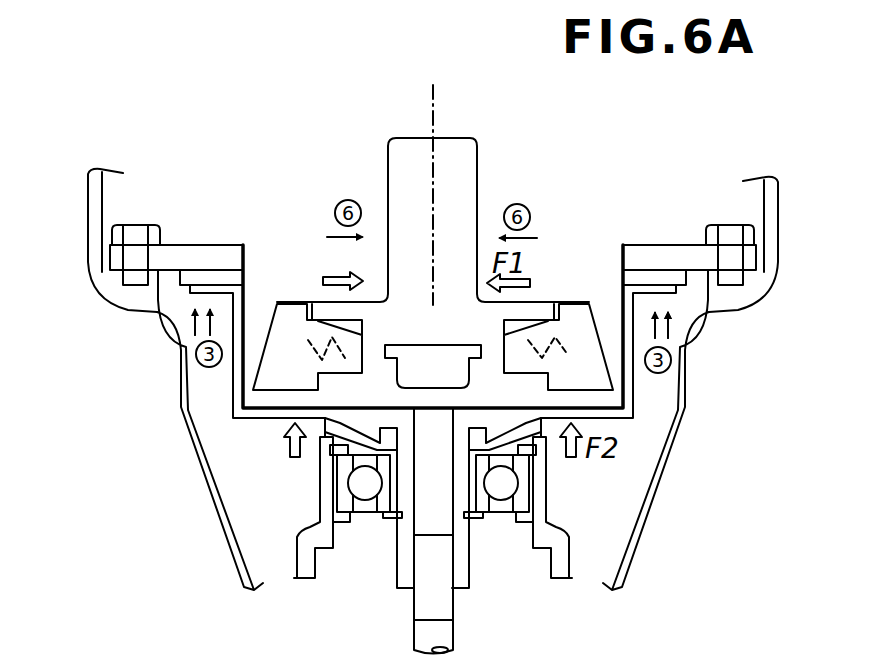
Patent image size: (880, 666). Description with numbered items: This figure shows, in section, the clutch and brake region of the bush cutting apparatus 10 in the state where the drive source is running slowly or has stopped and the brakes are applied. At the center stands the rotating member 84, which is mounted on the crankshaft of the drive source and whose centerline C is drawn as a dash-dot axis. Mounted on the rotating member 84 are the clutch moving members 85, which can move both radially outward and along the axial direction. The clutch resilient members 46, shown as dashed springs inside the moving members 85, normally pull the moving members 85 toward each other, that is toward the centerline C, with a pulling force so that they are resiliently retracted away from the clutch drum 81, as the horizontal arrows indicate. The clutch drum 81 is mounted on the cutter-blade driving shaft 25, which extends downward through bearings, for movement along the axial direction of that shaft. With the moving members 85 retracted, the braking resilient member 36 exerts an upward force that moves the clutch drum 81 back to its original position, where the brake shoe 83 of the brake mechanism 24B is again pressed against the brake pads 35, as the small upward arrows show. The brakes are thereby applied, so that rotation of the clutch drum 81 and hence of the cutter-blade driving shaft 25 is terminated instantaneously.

The bush cutting apparatus 10 is at (176, 136).
The brake mechanism 24B is at (262, 203).
The cutter-blade driving shaft 25 is at (405, 609).
The brake pads 35 is at (248, 280).
The braking resilient member 36 is at (517, 447).
The clutch resilient members 46 is at (540, 344).
The clutch drum 81 is at (222, 415).
The brake shoe 83 is at (168, 330).
The rotating member 84 is at (375, 126).
The clutch moving members 85 is at (293, 303).
The centerline C is at (436, 112).